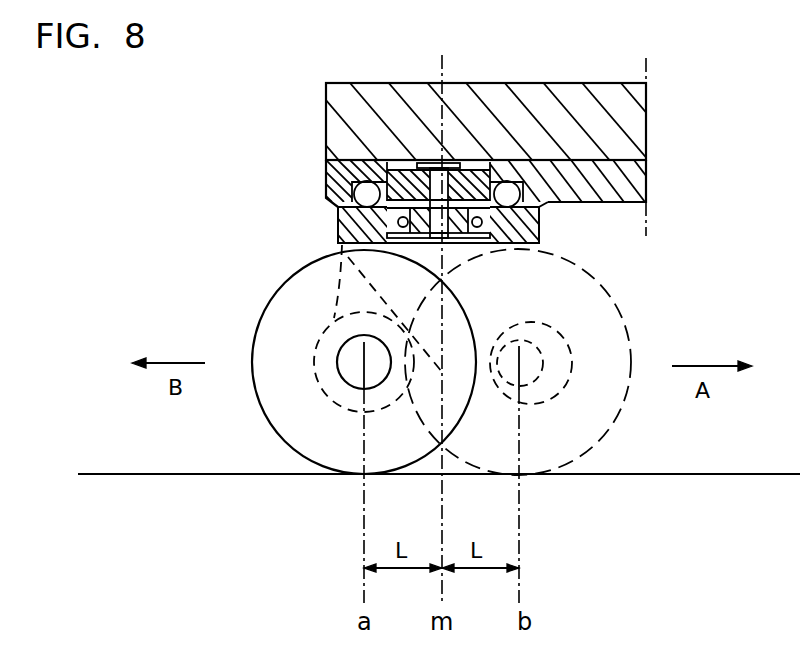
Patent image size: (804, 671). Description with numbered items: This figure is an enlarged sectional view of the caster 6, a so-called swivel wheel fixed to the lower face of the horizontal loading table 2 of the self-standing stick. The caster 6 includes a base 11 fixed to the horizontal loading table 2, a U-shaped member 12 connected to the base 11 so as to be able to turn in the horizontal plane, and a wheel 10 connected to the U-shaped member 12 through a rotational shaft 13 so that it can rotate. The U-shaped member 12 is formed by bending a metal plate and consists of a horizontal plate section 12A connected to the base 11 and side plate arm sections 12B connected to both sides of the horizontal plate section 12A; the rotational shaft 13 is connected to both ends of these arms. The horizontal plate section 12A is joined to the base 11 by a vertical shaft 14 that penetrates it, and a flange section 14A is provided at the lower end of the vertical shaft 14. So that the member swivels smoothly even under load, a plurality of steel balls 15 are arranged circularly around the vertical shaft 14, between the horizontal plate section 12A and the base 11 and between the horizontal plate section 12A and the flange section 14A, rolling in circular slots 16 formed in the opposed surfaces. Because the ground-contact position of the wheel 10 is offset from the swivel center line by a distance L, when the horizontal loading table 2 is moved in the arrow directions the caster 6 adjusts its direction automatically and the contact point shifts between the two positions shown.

The horizontal loading table 2 is at (379, 96).
The caster 6 is at (236, 258).
The wheel 10 is at (261, 400).
The base 11 is at (620, 187).
The U-shaped member 12 is at (715, 298).
The horizontal plate section 12A is at (534, 258).
The side plate arm section 12B is at (500, 303).
The rotational shaft 13 is at (345, 380).
The vertical shaft 14 is at (461, 167).
The flange section 14A is at (392, 255).
The steel balls 15 is at (355, 184).
The circular slots 16 is at (487, 170).